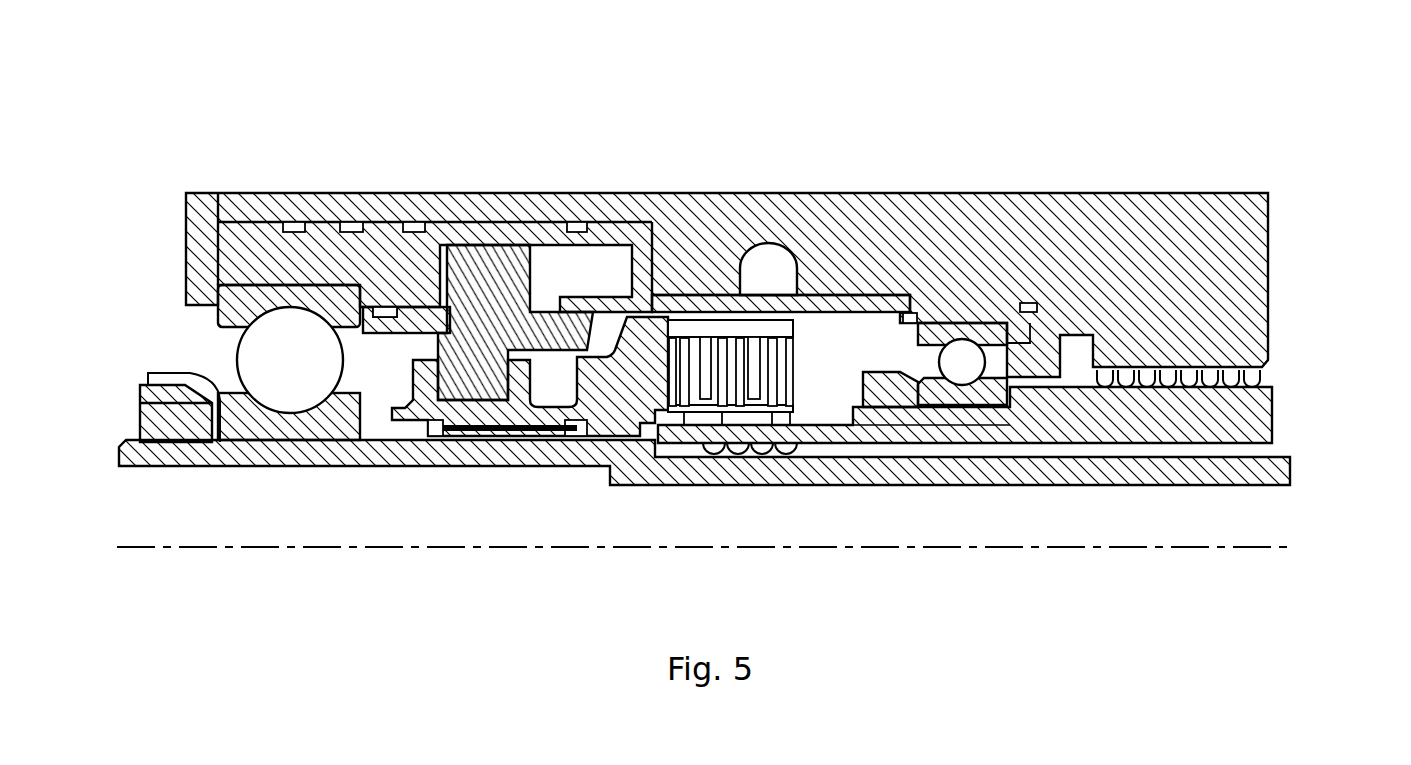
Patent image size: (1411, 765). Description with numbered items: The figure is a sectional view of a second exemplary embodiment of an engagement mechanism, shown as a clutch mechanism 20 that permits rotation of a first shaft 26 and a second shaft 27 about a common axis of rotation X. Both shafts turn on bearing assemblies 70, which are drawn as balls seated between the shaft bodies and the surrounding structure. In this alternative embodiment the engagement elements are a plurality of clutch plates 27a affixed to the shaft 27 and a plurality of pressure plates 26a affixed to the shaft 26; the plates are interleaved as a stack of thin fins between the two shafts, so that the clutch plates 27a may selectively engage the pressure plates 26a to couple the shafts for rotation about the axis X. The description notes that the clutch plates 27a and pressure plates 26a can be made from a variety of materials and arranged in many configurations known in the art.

The clutch mechanism 20 is at (775, 310).
The shaft 26 is at (263, 470).
The pressure plates 26a is at (748, 332).
The shaft 27 is at (1278, 410).
The clutch plates 27a is at (696, 372).
The bearing assemblies 70 is at (930, 410).
The axis of rotation X is at (814, 553).